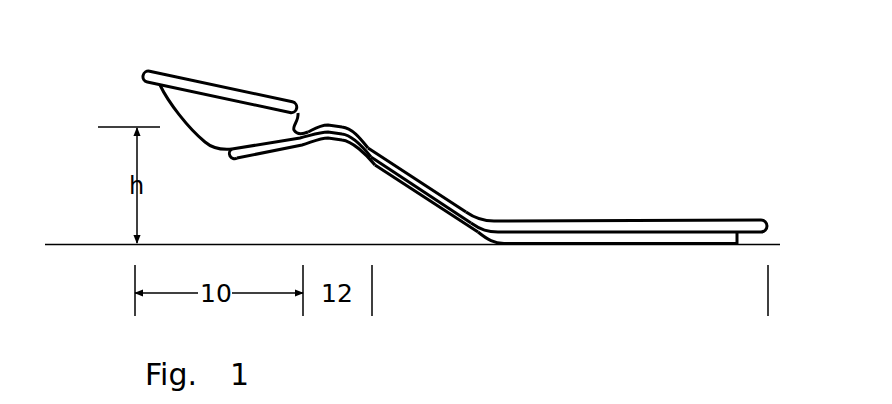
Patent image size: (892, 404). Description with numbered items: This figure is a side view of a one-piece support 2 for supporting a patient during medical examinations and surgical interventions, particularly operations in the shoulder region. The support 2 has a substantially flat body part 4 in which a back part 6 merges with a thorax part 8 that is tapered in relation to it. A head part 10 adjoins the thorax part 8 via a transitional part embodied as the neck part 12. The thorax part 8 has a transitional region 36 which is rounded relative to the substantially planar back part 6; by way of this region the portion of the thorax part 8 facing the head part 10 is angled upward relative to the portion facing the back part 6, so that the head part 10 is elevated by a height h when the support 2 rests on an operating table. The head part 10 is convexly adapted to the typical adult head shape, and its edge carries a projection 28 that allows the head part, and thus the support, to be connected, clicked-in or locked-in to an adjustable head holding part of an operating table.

The support 2 is at (518, 70).
The body part 4 is at (768, 293).
The back part 6 is at (652, 202).
The thorax part 8 is at (433, 175).
The head part 10 is at (221, 72).
The neck part 12 is at (345, 115).
The projection 28 is at (143, 74).
The transitional region 36 is at (477, 219).